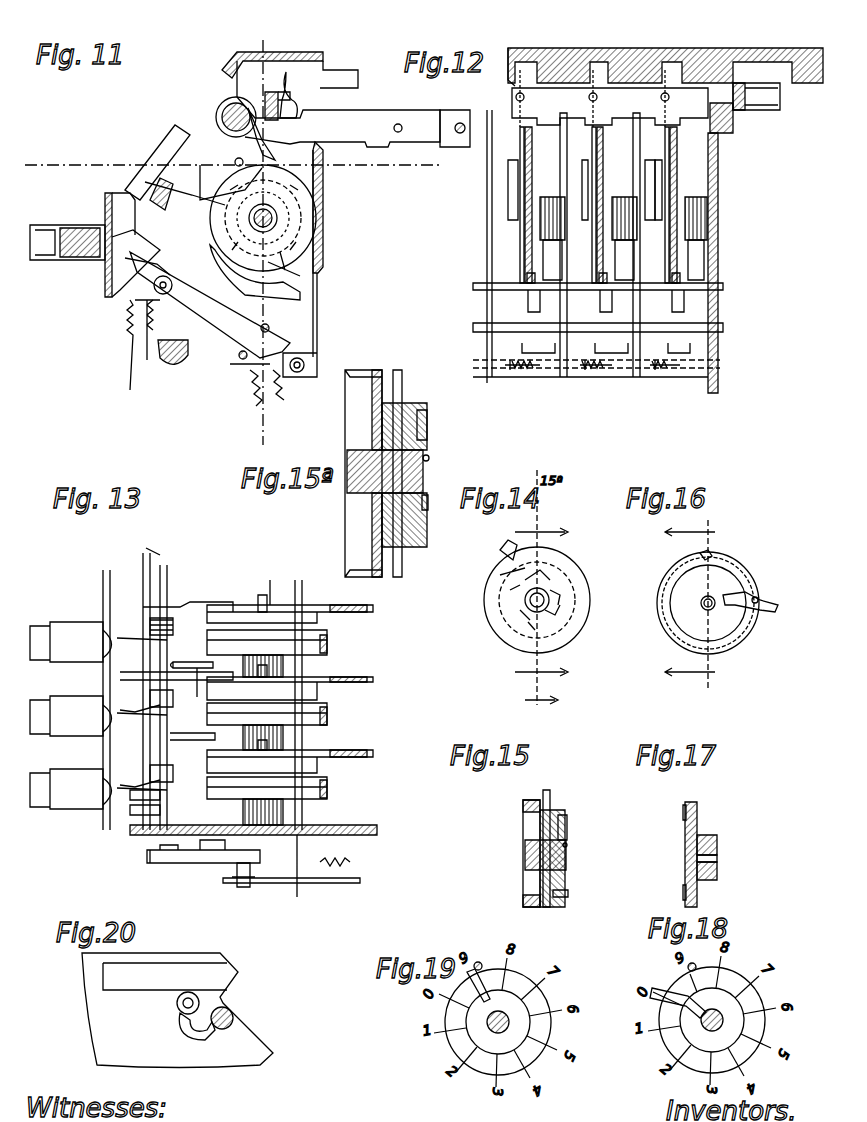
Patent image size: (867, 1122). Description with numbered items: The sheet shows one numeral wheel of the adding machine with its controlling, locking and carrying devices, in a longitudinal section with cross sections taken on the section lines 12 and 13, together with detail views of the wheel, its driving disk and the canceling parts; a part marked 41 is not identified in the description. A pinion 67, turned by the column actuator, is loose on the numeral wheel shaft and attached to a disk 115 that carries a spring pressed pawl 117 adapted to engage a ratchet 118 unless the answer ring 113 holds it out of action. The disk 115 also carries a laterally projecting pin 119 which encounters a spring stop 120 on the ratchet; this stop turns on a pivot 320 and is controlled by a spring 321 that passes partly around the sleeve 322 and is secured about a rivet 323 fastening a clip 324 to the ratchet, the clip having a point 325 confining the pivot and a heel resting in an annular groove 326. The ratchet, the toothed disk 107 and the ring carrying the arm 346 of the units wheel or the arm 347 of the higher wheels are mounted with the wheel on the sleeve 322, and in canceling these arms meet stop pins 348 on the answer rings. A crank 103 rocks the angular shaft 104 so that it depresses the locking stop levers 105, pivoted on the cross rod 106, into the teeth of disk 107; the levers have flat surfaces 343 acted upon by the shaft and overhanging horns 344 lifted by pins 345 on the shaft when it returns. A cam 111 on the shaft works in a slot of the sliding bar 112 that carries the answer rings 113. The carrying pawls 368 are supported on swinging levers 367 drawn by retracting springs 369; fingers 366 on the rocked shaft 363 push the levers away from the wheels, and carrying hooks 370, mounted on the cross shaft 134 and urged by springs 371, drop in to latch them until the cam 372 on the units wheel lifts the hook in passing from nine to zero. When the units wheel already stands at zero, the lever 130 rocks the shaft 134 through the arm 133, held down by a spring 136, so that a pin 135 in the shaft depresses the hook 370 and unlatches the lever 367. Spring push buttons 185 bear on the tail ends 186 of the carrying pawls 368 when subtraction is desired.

In FIG. 11, the section line 12 is at (276, 444).
In FIG. 11, the section line 13 is at (387, 175).
In FIG. 12, the frame plate 41 is at (487, 188).
In FIG. 13, the frame plate 41 is at (318, 622).
In FIG. 14, the frame plate 41 is at (537, 600).
In FIG. 15, the frame plate 41 is at (522, 803).
In FIG. 19, the frame plate 41 is at (448, 1048).
In FIG. 18, the frame plate 41 is at (662, 1046).
In FIG. 12, the pinion 67 is at (550, 245).
In FIG. 13, the pinion 67 is at (285, 667).
In FIG. 17, the pinion 67 is at (710, 835).
In FIG. 12, the crank 103 is at (742, 78).
In FIG. 12, the rock shaft 104 is at (700, 115).
In FIG. 20, the rock shaft 104 is at (177, 1003).
In FIG. 11, the locking stop lever 105 is at (338, 122).
In FIG. 12, the cross rod 106 is at (460, 135).
In FIG. 11, the toothed disk 107 is at (300, 227).
In FIG. 13, the toothed disk 107 is at (295, 600).
In FIG. 14, the toothed disk 107 is at (545, 592).
In FIG. 15, the toothed disk 107 is at (557, 810).
In FIG. 20, the cam 111 is at (197, 1040).
In FIG. 11, the sliding bar 112 is at (228, 103).
In FIG. 20, the sliding bar 112 is at (230, 1020).
In FIG. 11, the answer ring 113 is at (318, 188).
In FIG. 12, the answer ring 113 is at (537, 290).
In FIG. 13, the answer ring 113 is at (327, 642).
In FIG. 11, the disk 115 is at (308, 198).
In FIG. 12, the disk 115 is at (678, 260).
In FIG. 13, the disk 115 is at (328, 727).
In FIG. 16, the disk 115 is at (740, 640).
In FIG. 17, the disk 115 is at (700, 805).
In FIG. 12, the spring pressed pawl 117 is at (535, 197).
In FIG. 13, the spring pressed pawl 117 is at (215, 737).
In FIG. 16, the spring pressed pawl 117 is at (770, 600).
In FIG. 15A, the ratchet 118 is at (408, 545).
In FIG. 14, the ratchet 118 is at (505, 596).
In FIG. 15, the ratchet 118 is at (568, 892).
In FIG. 16, the laterally projecting pin 119 is at (712, 580).
In FIG. 15A, the spring stop 120 is at (428, 430).
In FIG. 14, the spring stop 120 is at (505, 575).
In FIG. 15, the spring stop 120 is at (568, 830).
In FIG. 13, the lever 130 is at (285, 885).
In FIG. 13, the arm 133 is at (238, 885).
In FIG. 11, the cross shaft 134 is at (170, 292).
In FIG. 13, the cross shaft 134 is at (160, 800).
In FIG. 13, the pin 135 is at (145, 810).
In FIG. 13, the spring 136 is at (235, 870).
In FIG. 11, the spring push button 185 is at (65, 245).
In FIG. 13, the spring push button 185 is at (42, 630).
In FIG. 11, the tail end 186 is at (115, 290).
In FIG. 13, the tail end 186 is at (110, 692).
In FIG. 15A, the pivot 320 is at (365, 440).
In FIG. 15A, the spring 321 is at (427, 500).
In FIG. 14, the spring 321 is at (512, 610).
In FIG. 15A, the sleeve 322 is at (425, 470).
In FIG. 14, the sleeve 322 is at (528, 605).
In FIG. 15, the sleeve 322 is at (525, 858).
In FIG. 19, the sleeve 322 is at (590, 972).
In FIG. 18, the sleeve 322 is at (700, 1012).
In FIG. 14, the rivet 323 is at (560, 598).
In FIG. 14, the clip 324 is at (560, 610).
In FIG. 15A, the point 325 is at (430, 440).
In FIG. 14, the point 325 is at (552, 585).
In FIG. 15A, the annular groove 326 is at (430, 456).
In FIG. 14, the annular groove 326 is at (530, 612).
In FIG. 15, the annular groove 326 is at (567, 845).
In FIG. 11, the flat surface 343 is at (265, 135).
In FIG. 11, the overhanging horn 344 is at (292, 75).
In FIG. 12, the overhanging horn 344 is at (605, 62).
In FIG. 11, the pin 345 is at (296, 95).
In FIG. 12, the pin 345 is at (600, 100).
In FIG. 12, the arm 346 is at (648, 160).
In FIG. 13, the arm 346 is at (320, 772).
In FIG. 18, the arm 346 is at (652, 996).
In FIG. 11, the arm 347 is at (323, 300).
In FIG. 12, the arm 347 is at (508, 160).
In FIG. 15A, the arm 347 is at (398, 560).
In FIG. 13, the arm 347 is at (328, 712).
In FIG. 14, the arm 347 is at (505, 545).
In FIG. 19, the arm 347 is at (468, 975).
In FIG. 11, the stop pin 348 is at (236, 158).
In FIG. 19, the stop pin 348 is at (478, 962).
In FIG. 18, the stop pin 348 is at (693, 962).
In FIG. 11, the shaft 363 is at (175, 190).
In FIG. 13, the finger 366 is at (180, 682).
In FIG. 11, the swinging lever 367 is at (230, 320).
In FIG. 12, the swinging lever 367 is at (540, 356).
In FIG. 13, the swinging lever 367 is at (150, 625).
In FIG. 11, the carrying pawl 368 is at (190, 160).
In FIG. 13, the carrying pawl 368 is at (170, 792).
In FIG. 11, the retracting spring 369 is at (283, 389).
In FIG. 11, the carrying hook 370 is at (160, 365).
In FIG. 13, the carrying hook 370 is at (188, 600).
In FIG. 11, the spring 371 is at (163, 318).
In FIG. 11, the cam 372 is at (322, 270).
In FIG. 13, the cam 372 is at (258, 597).
In FIG. 15, the cam 372 is at (525, 835).